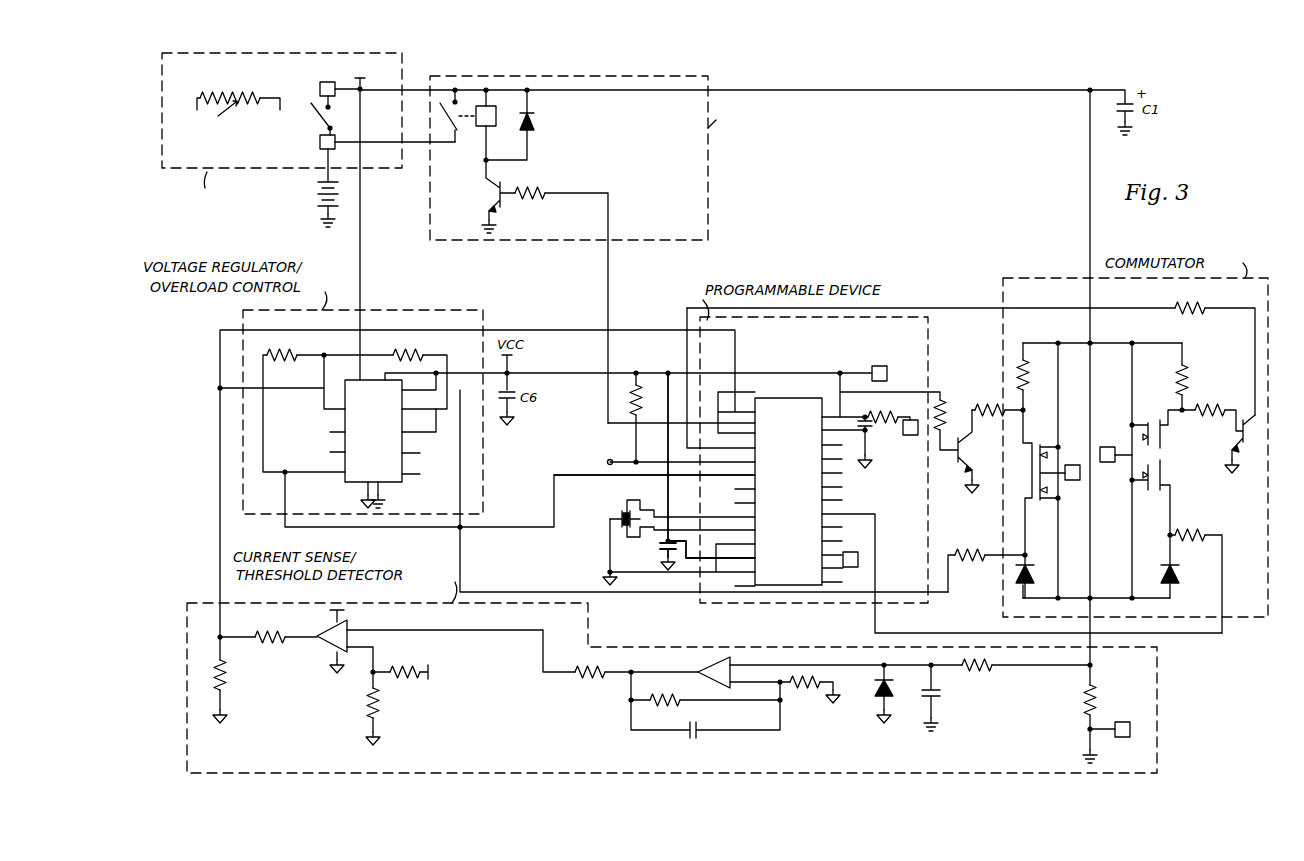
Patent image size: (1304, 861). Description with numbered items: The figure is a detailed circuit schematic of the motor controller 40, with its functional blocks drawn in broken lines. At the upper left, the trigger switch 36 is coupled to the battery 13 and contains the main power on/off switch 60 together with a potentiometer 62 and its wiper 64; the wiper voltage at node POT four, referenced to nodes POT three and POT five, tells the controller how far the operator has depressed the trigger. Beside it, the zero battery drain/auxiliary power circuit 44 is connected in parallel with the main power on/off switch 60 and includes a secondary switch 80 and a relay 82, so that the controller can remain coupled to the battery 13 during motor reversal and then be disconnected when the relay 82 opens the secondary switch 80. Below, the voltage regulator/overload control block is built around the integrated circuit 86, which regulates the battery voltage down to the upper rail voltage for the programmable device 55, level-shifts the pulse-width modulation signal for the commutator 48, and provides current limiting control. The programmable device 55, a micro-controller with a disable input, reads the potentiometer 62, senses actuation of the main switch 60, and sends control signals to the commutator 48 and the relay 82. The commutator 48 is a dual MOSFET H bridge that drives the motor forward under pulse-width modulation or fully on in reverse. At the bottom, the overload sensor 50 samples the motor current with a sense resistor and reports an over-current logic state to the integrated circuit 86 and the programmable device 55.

The motor controller 40 is at (717, 24).
The trigger switch 36 is at (183, 160).
The main power on/off switch 60 is at (311, 103).
The potentiometer 62 is at (278, 94).
The wiper 64 is at (228, 94).
The battery 13 is at (315, 206).
The zero battery drain/auxiliary power circuit 44 is at (705, 213).
The secondary switch 80 is at (437, 140).
The relay 82 is at (497, 113).
The integrated circuit 86 is at (398, 487).
The programmable device 55 is at (915, 328).
The commutator 48 is at (1063, 280).
The overload sensor 50 is at (512, 768).